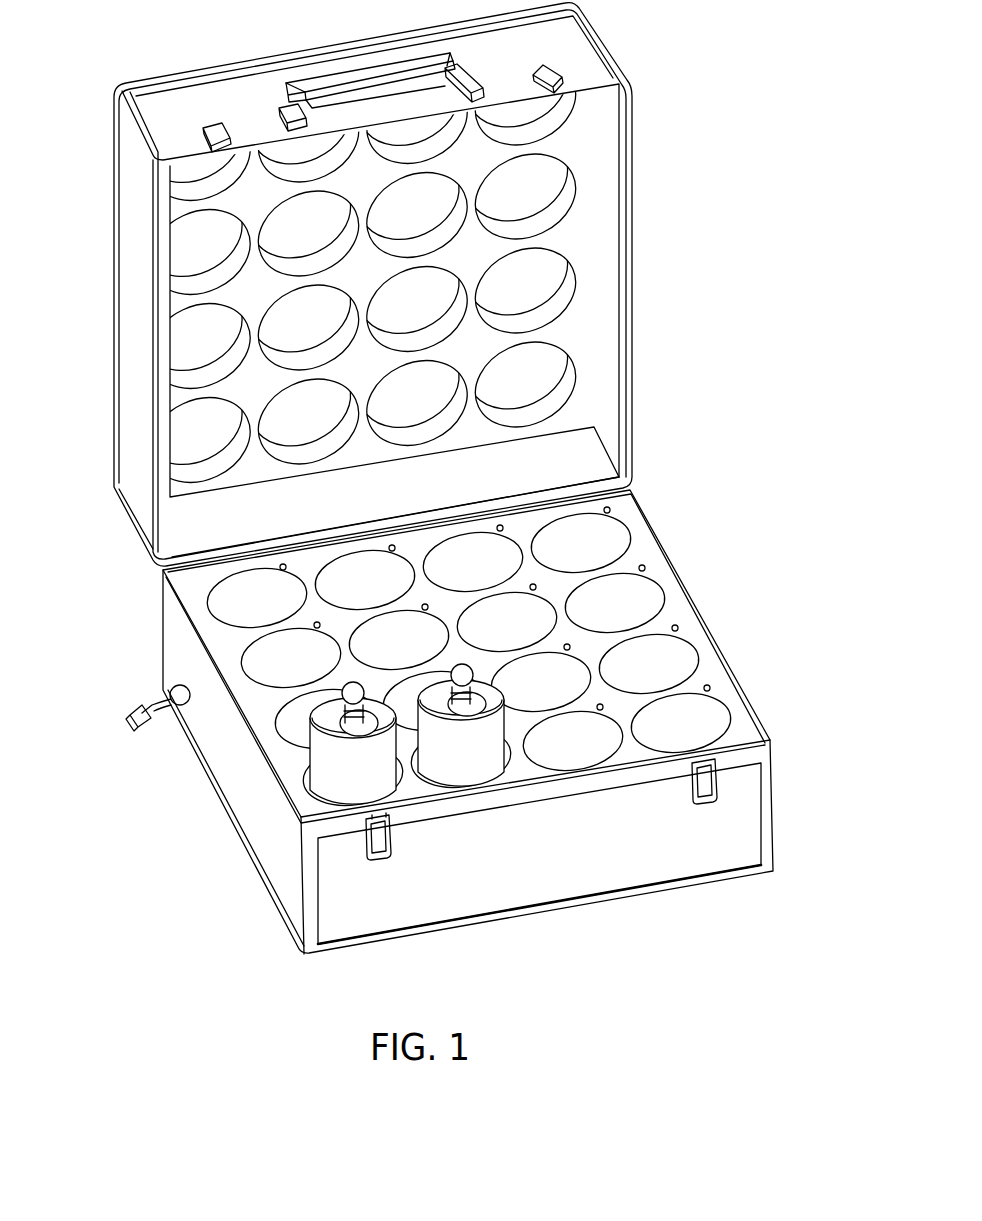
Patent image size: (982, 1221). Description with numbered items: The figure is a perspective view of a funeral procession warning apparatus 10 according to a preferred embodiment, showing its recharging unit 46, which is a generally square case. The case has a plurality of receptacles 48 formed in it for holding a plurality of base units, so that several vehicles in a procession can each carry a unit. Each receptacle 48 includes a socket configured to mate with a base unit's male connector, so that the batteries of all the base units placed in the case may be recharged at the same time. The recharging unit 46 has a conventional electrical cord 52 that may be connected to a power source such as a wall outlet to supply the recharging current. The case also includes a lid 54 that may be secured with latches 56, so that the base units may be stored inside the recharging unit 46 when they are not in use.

The funeral procession warning apparatus 10 is at (447, 478).
The lid 54 is at (133, 353).
The recharging unit 46 is at (647, 547).
The receptacle 48 is at (683, 657).
The electrical cord 52 is at (150, 698).
The latches 56 is at (383, 860).